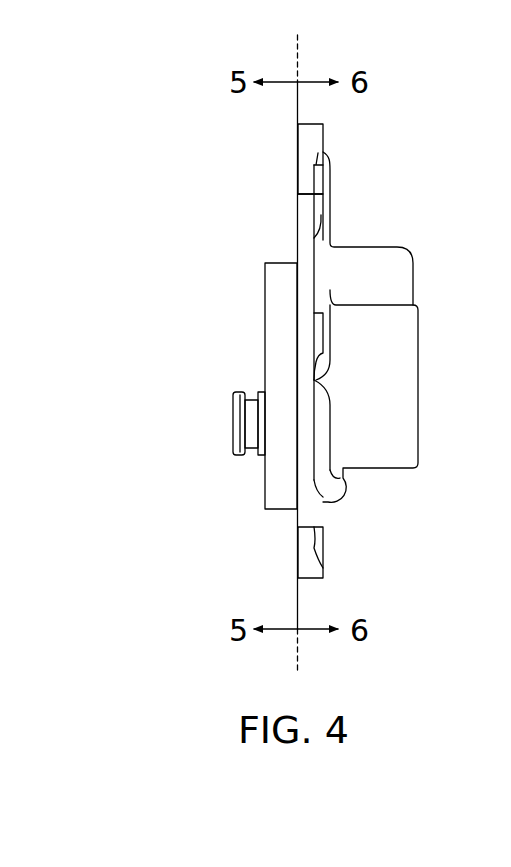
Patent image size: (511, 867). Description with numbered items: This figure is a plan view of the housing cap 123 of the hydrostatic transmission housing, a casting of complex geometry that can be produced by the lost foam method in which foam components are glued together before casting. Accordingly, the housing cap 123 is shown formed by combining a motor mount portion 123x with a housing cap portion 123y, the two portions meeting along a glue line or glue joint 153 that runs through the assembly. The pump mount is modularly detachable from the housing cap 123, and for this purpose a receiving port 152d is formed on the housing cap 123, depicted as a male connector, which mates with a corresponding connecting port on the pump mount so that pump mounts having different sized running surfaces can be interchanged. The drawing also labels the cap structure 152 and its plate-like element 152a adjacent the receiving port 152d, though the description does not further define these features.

The housing cap 123 is at (165, 205).
The motor mount portion 123x is at (273, 262).
The housing cap portion 123y is at (365, 247).
The mounting bracket 152 is at (214, 299).
The bracket plate 152a is at (265, 360).
The receiving port 152d is at (234, 423).
The glue line 153 is at (299, 52).